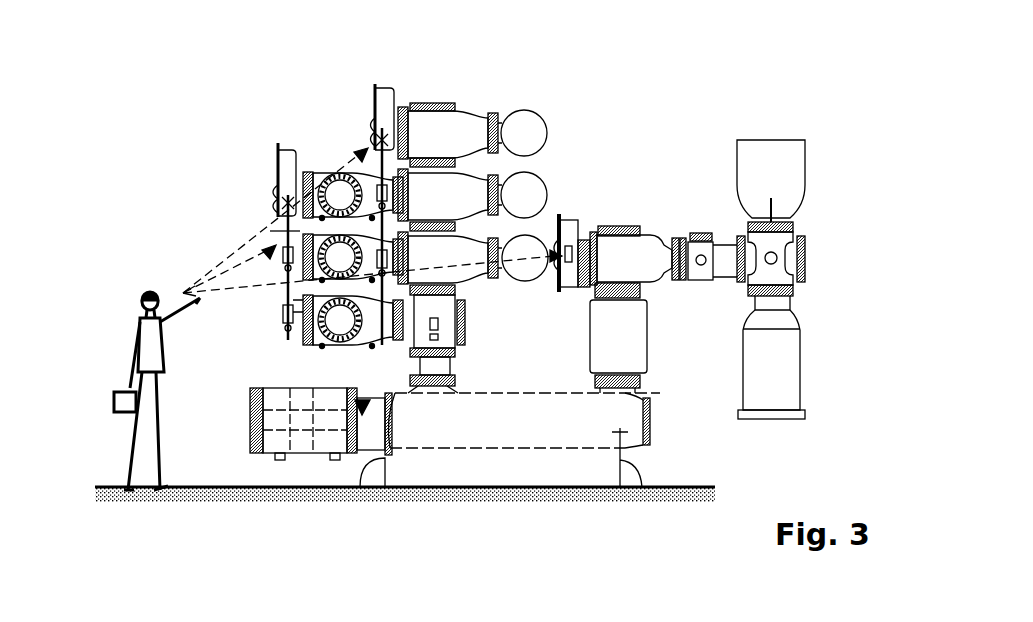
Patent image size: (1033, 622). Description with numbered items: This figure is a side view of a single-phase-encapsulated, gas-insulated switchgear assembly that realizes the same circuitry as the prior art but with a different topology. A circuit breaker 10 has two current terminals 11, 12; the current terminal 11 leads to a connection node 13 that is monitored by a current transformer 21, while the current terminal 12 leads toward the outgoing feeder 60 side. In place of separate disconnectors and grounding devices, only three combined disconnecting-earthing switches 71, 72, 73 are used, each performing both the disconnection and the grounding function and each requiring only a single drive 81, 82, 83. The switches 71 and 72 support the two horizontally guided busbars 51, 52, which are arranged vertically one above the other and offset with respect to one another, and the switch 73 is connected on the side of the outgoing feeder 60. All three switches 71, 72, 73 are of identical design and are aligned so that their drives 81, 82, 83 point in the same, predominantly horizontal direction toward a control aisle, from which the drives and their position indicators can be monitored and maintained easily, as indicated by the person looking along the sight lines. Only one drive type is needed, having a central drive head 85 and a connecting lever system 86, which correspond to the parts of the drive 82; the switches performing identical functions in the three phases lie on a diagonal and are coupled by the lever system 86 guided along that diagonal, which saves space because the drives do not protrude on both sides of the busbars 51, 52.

The circuit breaker 10 is at (523, 428).
The current terminal 11 is at (435, 390).
The current terminal 12 is at (612, 390).
The connection node 13 is at (422, 328).
The current transformer 21 is at (622, 347).
The busbar 51 is at (340, 322).
The busbar 52 is at (526, 245).
The outgoing feeder 60 is at (723, 256).
The combined disconnecting-earthing switch 71 is at (378, 322).
The combined disconnecting-earthing switch 72 is at (463, 198).
The combined disconnecting-earthing switch 73 is at (648, 258).
The drive 81 is at (298, 330).
The drive 82 is at (421, 250).
The drive 83 is at (570, 233).
The central drive head 85 is at (288, 161).
The connecting lever system 86 is at (286, 231).